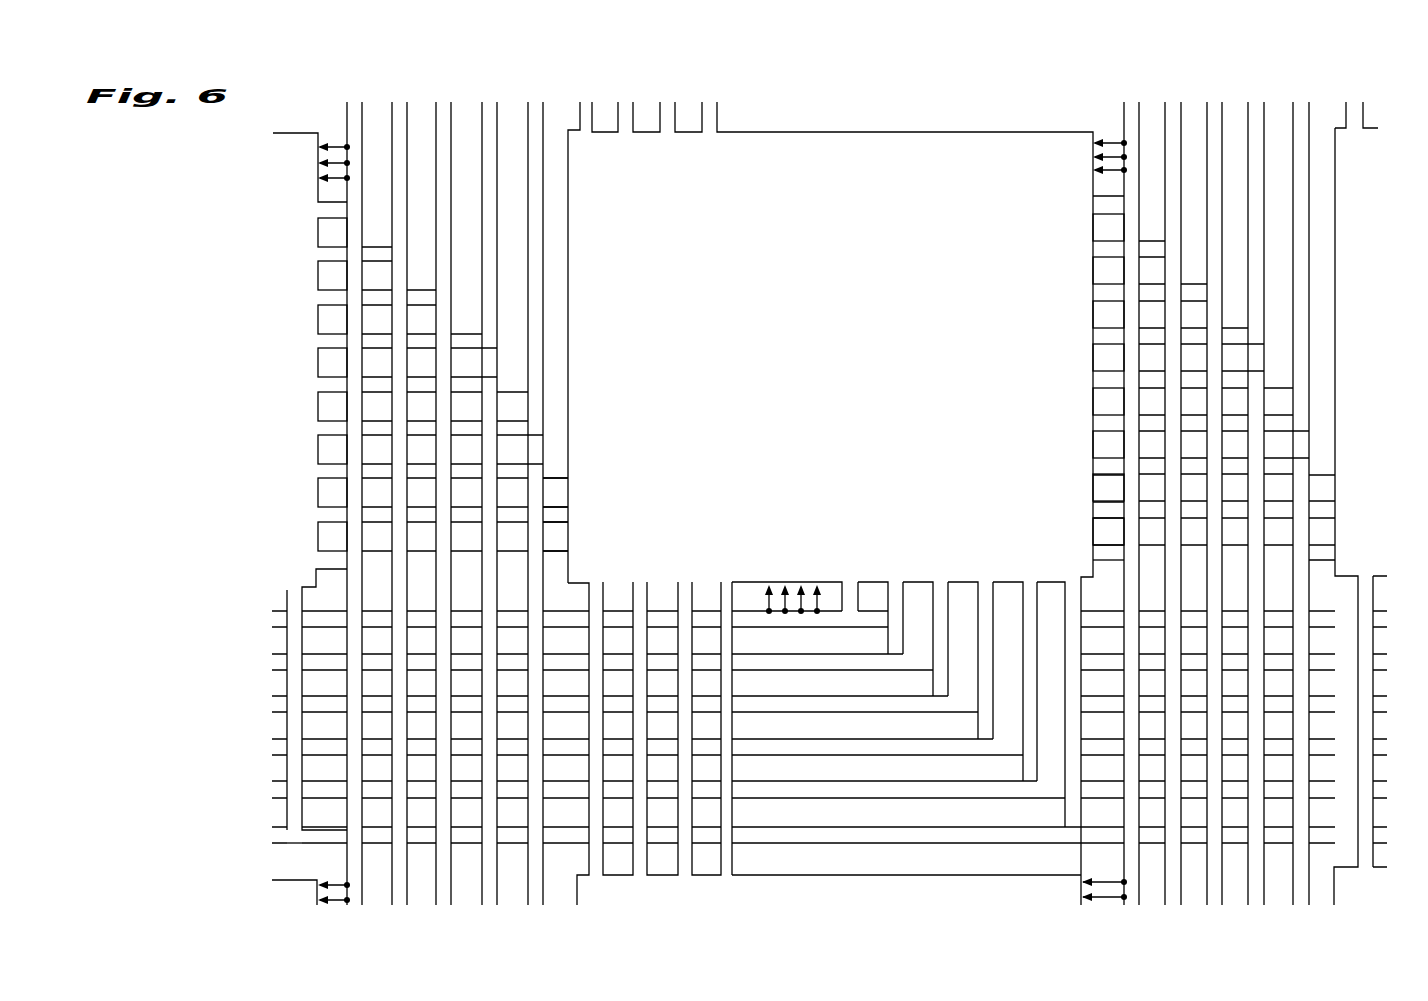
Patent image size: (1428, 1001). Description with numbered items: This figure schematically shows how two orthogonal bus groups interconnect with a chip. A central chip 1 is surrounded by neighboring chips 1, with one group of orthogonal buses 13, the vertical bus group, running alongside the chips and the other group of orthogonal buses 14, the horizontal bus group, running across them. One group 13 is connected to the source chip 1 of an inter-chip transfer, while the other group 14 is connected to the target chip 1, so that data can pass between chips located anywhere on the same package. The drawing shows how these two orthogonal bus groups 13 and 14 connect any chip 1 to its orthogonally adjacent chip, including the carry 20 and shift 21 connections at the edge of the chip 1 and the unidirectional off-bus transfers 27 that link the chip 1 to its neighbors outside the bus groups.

The chip 1 is at (279, 342).
The group of orthogonal buses 13 is at (548, 96).
The group of orthogonal buses 14 is at (1083, 574).
The carry 20 is at (557, 515).
The shift 21 is at (557, 558).
The unidirectional off-bus transfer 27 is at (733, 98).